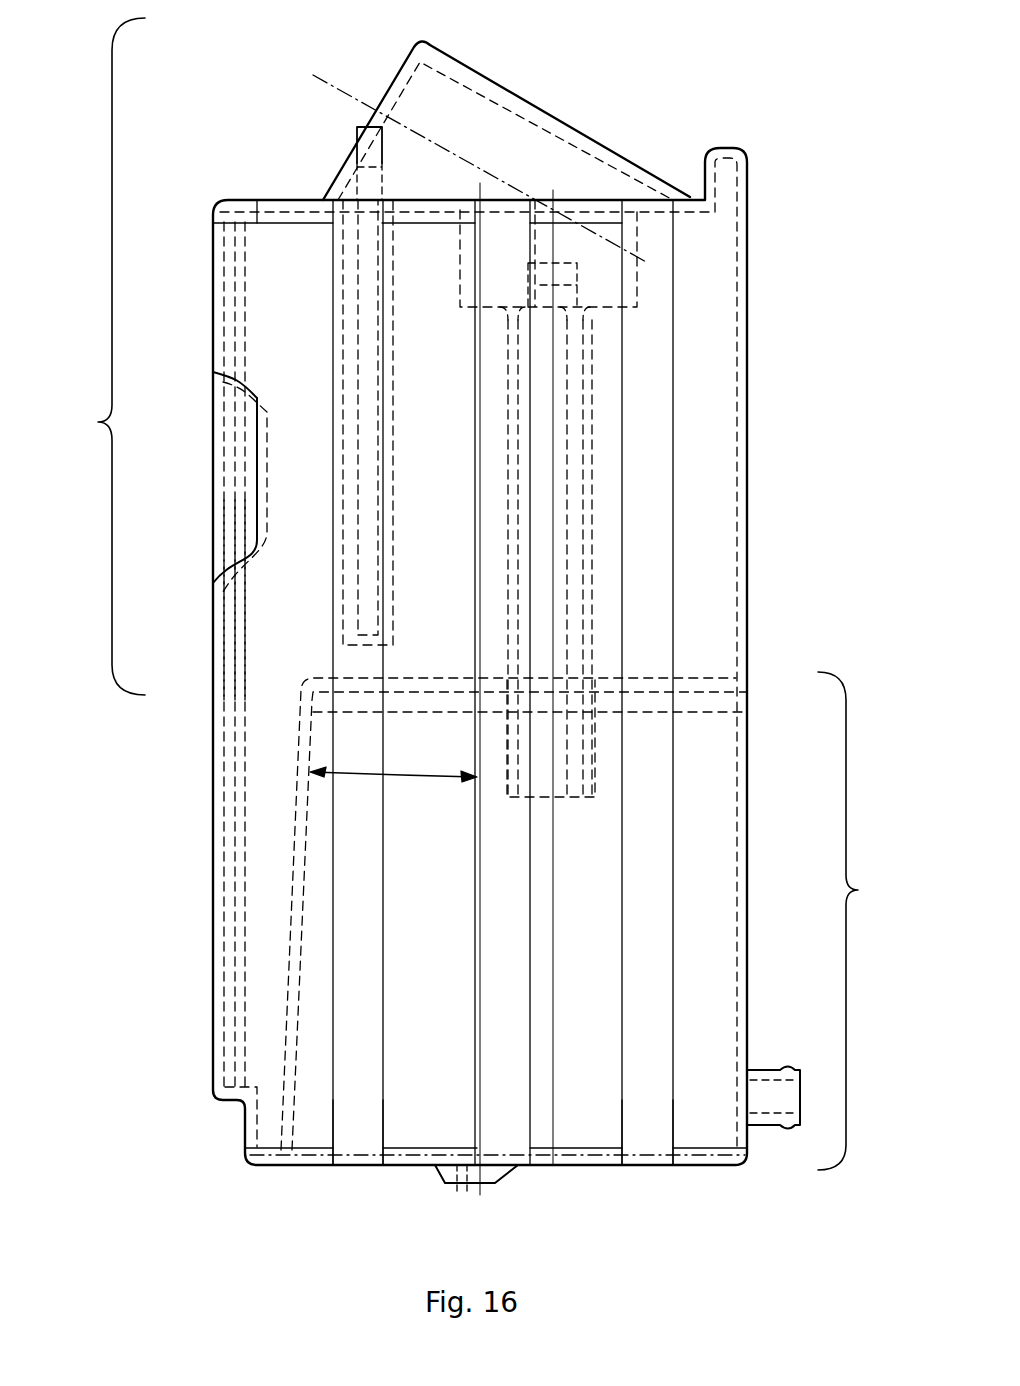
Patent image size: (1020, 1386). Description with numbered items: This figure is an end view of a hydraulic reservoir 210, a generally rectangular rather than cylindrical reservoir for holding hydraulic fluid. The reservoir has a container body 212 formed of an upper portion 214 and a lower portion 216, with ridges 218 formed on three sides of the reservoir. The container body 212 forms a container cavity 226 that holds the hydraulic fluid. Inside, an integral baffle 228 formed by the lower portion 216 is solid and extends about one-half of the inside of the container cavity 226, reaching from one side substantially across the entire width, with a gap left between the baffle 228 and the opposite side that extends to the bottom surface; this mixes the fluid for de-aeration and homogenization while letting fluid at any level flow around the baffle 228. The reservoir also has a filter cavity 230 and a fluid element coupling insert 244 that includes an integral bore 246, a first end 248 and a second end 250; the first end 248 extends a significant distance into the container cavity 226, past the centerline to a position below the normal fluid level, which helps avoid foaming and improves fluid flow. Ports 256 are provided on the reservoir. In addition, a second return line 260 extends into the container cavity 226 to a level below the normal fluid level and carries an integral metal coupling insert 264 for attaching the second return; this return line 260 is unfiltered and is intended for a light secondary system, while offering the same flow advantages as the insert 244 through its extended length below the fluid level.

The hydraulic reservoir 210 is at (815, 565).
The container body 212 is at (213, 863).
The upper portion 214 is at (95, 356).
The lower portion 216 is at (863, 921).
The ridges 218 is at (355, 1120).
The container cavity 226 is at (280, 627).
The baffle 228 is at (300, 935).
The filter cavity 230 is at (498, 228).
The fluid element coupling insert 244 is at (583, 287).
The integral bore 246 is at (560, 467).
The first end 248 is at (575, 772).
The second end 250 is at (580, 265).
The ports 256 is at (770, 1125).
The second return line 260 is at (355, 277).
The integral metal coupling insert 264 is at (357, 127).